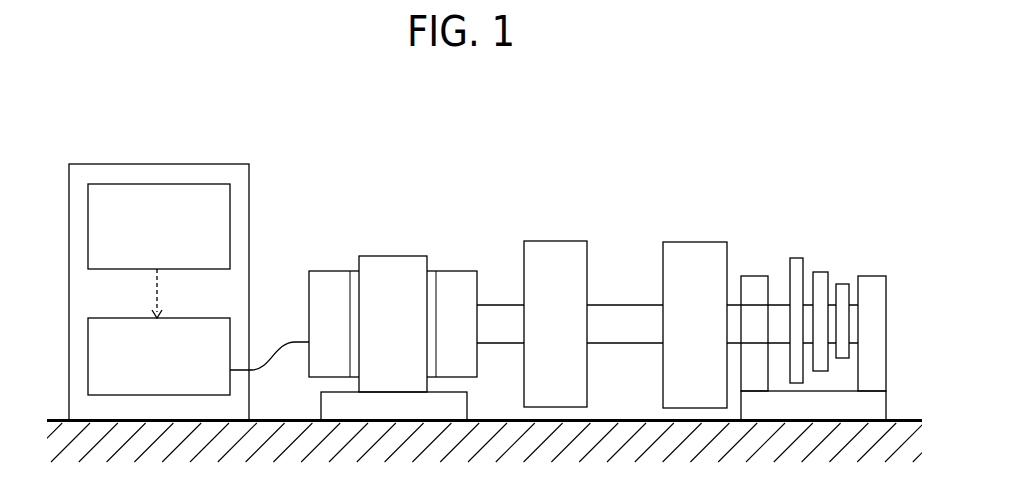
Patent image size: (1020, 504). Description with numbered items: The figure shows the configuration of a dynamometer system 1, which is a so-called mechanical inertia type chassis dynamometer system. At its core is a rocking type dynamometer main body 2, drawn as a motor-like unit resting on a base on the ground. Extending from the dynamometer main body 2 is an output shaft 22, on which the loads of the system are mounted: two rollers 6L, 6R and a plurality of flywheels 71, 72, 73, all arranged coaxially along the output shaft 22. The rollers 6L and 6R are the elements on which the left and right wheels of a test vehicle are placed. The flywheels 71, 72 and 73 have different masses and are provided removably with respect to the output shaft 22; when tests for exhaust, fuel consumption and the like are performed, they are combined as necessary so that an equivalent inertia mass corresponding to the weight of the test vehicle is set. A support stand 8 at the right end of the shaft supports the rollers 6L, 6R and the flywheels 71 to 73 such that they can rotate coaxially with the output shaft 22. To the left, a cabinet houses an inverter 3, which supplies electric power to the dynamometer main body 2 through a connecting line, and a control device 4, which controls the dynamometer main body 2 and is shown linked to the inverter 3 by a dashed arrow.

The dynamometer system 1 is at (720, 125).
The dynamometer main body 2 is at (411, 259).
The output shaft 22 is at (489, 313).
The inverter 3 is at (88, 355).
The control device 4 is at (88, 228).
The roller 6L is at (574, 243).
The roller 6R is at (705, 245).
The flywheel 71 is at (800, 258).
The flywheel 72 is at (821, 272).
The flywheel 73 is at (843, 284).
The support stand 8 is at (878, 278).